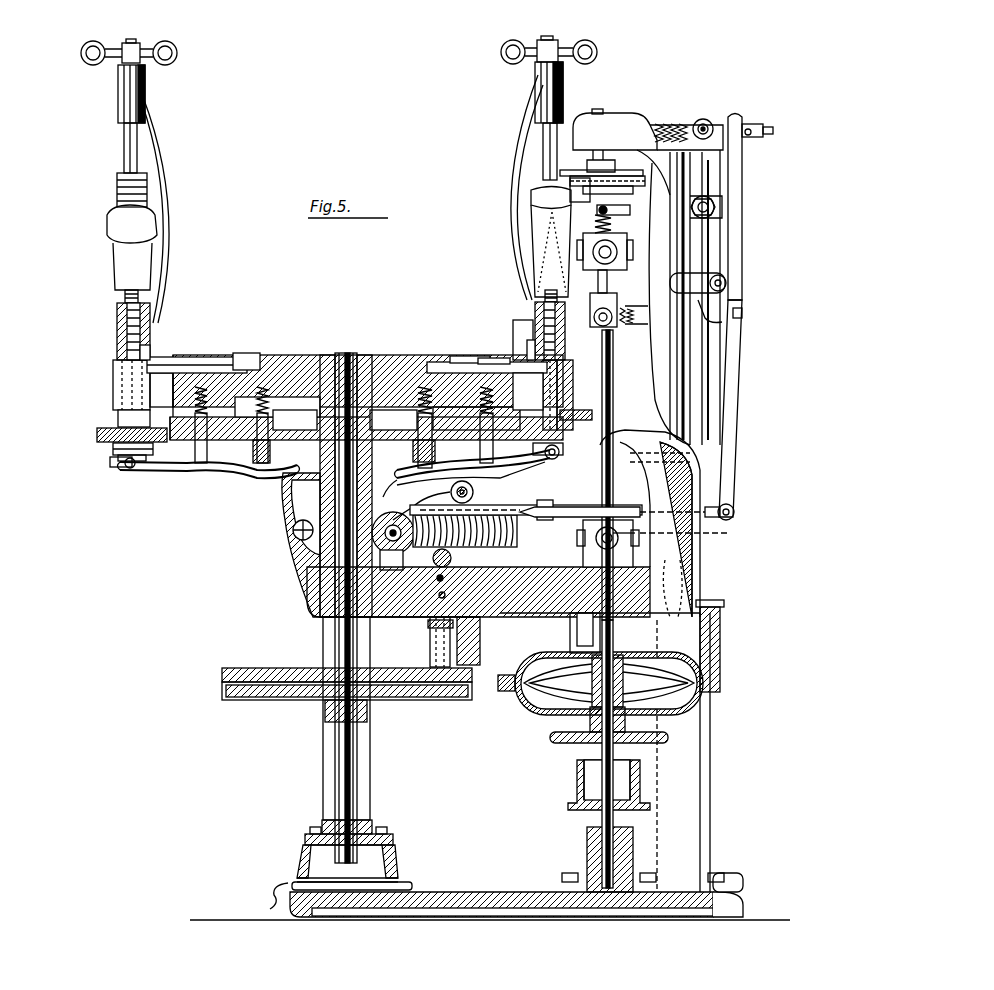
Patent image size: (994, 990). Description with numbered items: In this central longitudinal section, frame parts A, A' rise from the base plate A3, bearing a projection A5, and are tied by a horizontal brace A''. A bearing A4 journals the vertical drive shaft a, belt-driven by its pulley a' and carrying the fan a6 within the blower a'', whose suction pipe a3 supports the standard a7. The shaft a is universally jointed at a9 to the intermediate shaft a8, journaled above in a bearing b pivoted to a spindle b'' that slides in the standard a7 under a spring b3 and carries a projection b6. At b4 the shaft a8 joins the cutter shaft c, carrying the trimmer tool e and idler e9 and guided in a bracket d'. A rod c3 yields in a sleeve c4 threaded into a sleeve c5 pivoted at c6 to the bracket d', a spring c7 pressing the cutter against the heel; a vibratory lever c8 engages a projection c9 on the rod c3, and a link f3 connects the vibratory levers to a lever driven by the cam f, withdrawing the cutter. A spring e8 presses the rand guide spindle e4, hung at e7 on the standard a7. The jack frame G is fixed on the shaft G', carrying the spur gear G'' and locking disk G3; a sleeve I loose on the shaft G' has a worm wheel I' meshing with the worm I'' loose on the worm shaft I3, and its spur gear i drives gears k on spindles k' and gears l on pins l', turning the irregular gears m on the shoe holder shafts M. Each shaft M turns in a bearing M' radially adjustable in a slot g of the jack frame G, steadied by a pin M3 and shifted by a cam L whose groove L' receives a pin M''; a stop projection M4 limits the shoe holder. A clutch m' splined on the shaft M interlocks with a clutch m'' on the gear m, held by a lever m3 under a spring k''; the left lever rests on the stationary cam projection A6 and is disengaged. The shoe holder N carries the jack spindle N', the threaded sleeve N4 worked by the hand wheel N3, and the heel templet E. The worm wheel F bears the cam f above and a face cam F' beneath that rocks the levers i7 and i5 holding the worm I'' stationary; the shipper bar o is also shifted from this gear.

The hand wheel N3 is at (177, 53).
The curved arm N is at (340, 192).
The stem N4 is at (124, 152).
The wrench/socket E is at (115, 178).
The neck N' is at (329, 295).
The threaded column M4 is at (117, 348).
The slide block M' is at (326, 395).
The block g is at (520, 320).
The table G is at (366, 382).
The opening i is at (345, 420).
The rod M3 is at (187, 360).
The collar L' is at (361, 344).
The bar L is at (288, 380).
The arm M is at (335, 342).
The block M'' is at (528, 391).
The rack m is at (322, 426).
The plate m'' is at (95, 452).
The roller m' is at (324, 462).
The bracket m3 is at (140, 465).
The lever l is at (334, 482).
The post l' is at (331, 445).
The spring post k' is at (327, 449).
The nut k'' is at (355, 452).
The lever k is at (364, 502).
The bracket A6 is at (285, 523).
The pin I' is at (303, 532).
The sleeve I is at (351, 486).
The shaft G' is at (368, 591).
The worm wheel I3 is at (396, 520).
The block I'' is at (391, 566).
The worm F is at (476, 531).
The worm shaft F' is at (526, 535).
The collar f is at (473, 493).
The pin o is at (472, 489).
The pin i7 is at (452, 558).
The screws i5 is at (446, 578).
The bed A'' is at (478, 568).
The plate G3 is at (230, 668).
The plate G'' is at (347, 704).
The standard A is at (342, 749).
The base A3 is at (458, 892).
The clamp A5 is at (268, 902).
The bearing A4 is at (587, 858).
The column A' is at (690, 746).
The pulley a6 is at (600, 683).
The collar a'' is at (593, 725).
The bracket a' is at (598, 785).
The shaft a is at (590, 754).
The rod a8 is at (613, 410).
The housing a3 is at (650, 390).
The bar f3 is at (628, 507).
The line a9 is at (682, 532).
The socket e is at (530, 193).
The linkage e9 is at (575, 170).
The block e4 is at (577, 203).
The spring e8 is at (620, 218).
The bearing b4 is at (628, 253).
The pin c is at (608, 284).
The spring b3 is at (632, 309).
The block b is at (612, 321).
The head d' is at (648, 142).
The spring c7 is at (668, 122).
The nut c6 is at (707, 119).
The pivot c5 is at (700, 120).
The bar c4 is at (740, 117).
The bar c8 is at (733, 405).
The stud c3 is at (775, 130).
The pin c9 is at (749, 136).
The nut e7 is at (705, 196).
The frame a7 is at (690, 368).
The arm b'' is at (725, 303).
The clip b6 is at (742, 310).